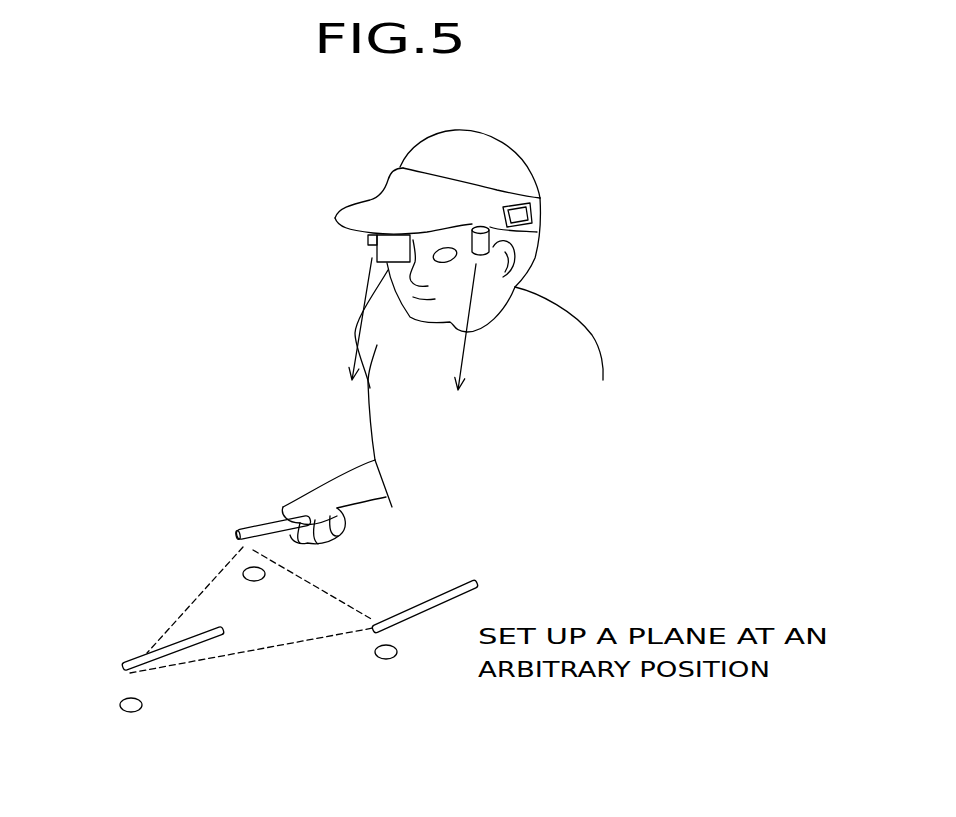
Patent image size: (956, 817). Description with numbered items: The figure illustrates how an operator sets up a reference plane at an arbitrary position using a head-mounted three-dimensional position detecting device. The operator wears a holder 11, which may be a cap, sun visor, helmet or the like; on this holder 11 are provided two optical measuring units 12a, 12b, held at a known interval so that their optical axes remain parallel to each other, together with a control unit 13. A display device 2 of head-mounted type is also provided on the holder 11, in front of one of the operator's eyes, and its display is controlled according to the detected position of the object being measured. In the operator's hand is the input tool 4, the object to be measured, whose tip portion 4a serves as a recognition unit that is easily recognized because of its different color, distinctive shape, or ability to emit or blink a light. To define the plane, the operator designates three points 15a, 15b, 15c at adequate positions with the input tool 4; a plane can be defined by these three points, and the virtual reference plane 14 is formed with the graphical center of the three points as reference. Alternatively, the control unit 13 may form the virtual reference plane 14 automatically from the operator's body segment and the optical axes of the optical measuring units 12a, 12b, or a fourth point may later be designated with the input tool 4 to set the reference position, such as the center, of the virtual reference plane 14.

The display device 2 is at (388, 270).
The holder 11 is at (492, 183).
The control unit 13 is at (532, 213).
The optical measuring unit 12a is at (367, 237).
The optical measuring unit 12b is at (490, 245).
The input tool 4 is at (288, 517).
The tip portion 4a is at (263, 523).
The virtual reference plane 14 is at (337, 597).
The point 15a is at (243, 568).
The point 15b is at (128, 713).
The point 15c is at (390, 660).